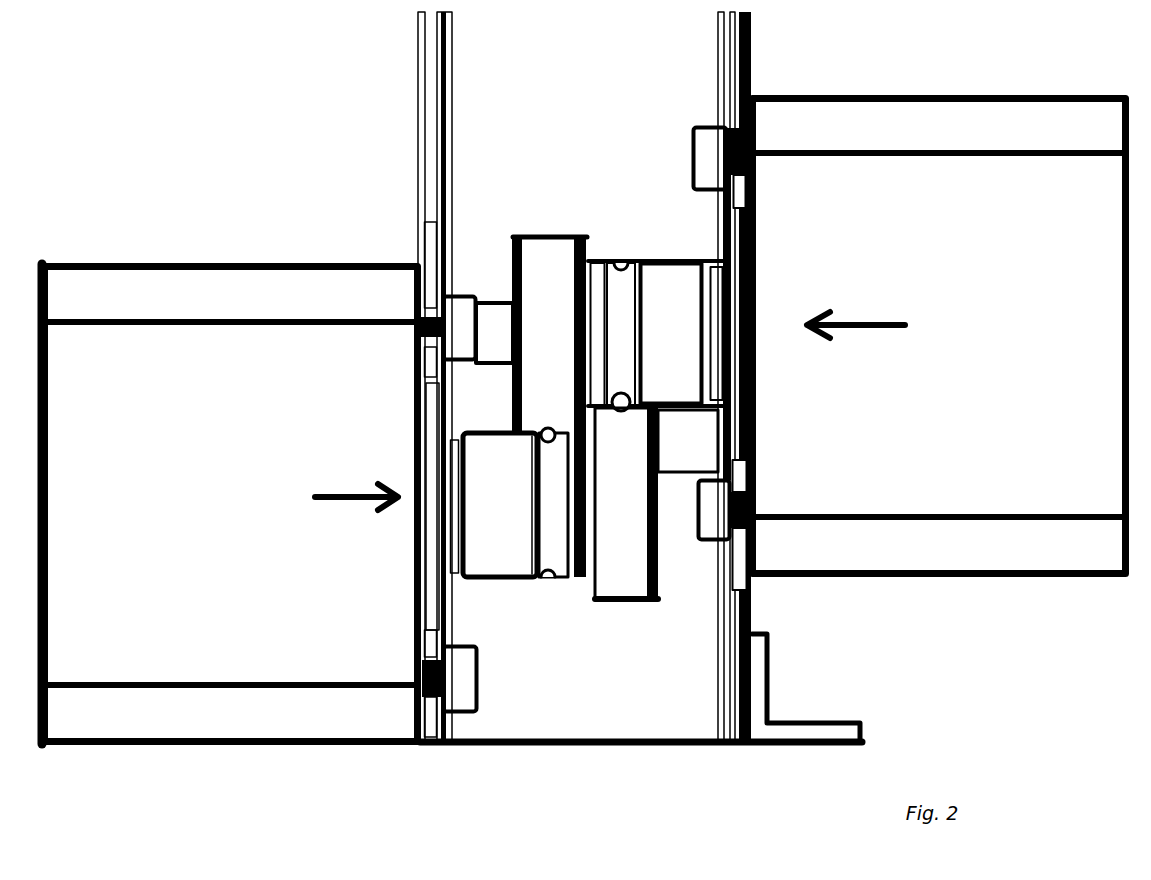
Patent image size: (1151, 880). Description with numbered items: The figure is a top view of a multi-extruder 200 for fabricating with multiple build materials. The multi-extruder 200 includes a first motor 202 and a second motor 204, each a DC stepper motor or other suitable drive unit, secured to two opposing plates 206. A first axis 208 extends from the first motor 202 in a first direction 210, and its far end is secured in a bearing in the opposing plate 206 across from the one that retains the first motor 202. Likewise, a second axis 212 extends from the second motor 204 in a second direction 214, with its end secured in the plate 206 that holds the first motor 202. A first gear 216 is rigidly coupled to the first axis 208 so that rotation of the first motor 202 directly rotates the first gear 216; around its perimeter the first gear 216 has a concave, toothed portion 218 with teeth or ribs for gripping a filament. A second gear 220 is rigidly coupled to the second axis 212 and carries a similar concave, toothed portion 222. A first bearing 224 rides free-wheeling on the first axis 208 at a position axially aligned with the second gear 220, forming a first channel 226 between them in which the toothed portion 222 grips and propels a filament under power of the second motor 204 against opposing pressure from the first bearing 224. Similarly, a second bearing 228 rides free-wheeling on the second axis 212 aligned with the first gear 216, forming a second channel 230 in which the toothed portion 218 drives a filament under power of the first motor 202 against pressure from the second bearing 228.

The multi-extruder 200 is at (210, 141).
The first motor 202 is at (213, 509).
The second motor 204 is at (932, 394).
The opposing plates 206 is at (420, 73).
The first axis 208 is at (685, 533).
The first direction 210 is at (348, 492).
The second axis 212 is at (497, 300).
The second direction 214 is at (860, 322).
The first gear 216 is at (479, 495).
The concave, toothed portion 218 is at (548, 572).
The second gear 220 is at (647, 310).
The concave, toothed portion 222 is at (617, 268).
The first bearing 224 is at (656, 603).
The first channel 226 is at (612, 415).
The second bearing 228 is at (540, 236).
The second channel 230 is at (543, 420).